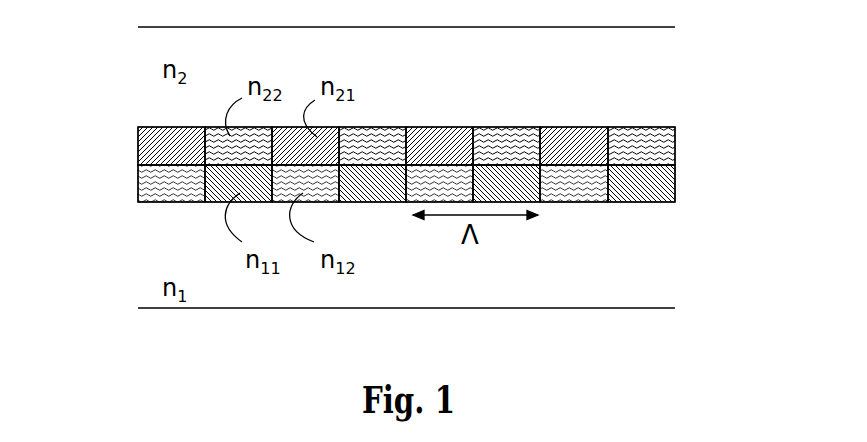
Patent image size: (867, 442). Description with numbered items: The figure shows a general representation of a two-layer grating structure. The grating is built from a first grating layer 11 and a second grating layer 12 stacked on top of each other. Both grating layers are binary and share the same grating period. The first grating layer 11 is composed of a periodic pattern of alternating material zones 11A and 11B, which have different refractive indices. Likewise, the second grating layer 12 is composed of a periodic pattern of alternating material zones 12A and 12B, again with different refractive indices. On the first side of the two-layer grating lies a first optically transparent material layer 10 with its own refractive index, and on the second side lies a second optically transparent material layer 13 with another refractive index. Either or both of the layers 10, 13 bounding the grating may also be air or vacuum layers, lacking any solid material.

The first optically transparent material layer 10 is at (117, 203).
The first grating layer 11 is at (409, 219).
The material zone 11A is at (588, 195).
The material zone 11B is at (668, 183).
The second grating layer 12 is at (409, 109).
The material zone 12A is at (667, 143).
The material zone 12B is at (580, 137).
The second optically transparent material layer 13 is at (117, 27).